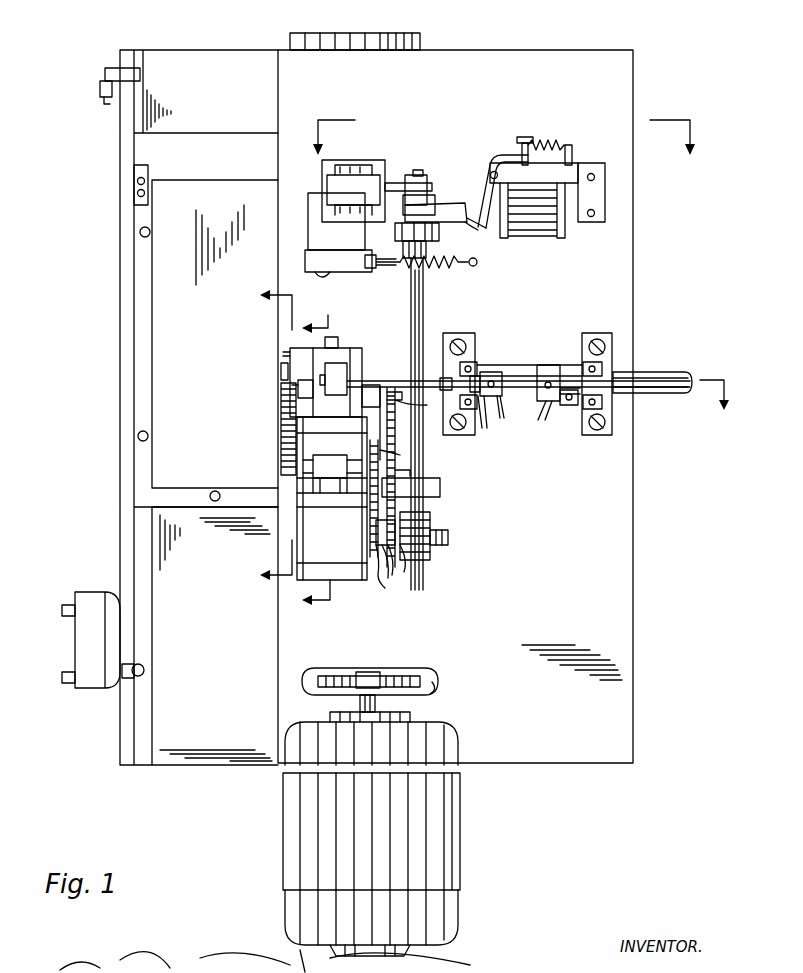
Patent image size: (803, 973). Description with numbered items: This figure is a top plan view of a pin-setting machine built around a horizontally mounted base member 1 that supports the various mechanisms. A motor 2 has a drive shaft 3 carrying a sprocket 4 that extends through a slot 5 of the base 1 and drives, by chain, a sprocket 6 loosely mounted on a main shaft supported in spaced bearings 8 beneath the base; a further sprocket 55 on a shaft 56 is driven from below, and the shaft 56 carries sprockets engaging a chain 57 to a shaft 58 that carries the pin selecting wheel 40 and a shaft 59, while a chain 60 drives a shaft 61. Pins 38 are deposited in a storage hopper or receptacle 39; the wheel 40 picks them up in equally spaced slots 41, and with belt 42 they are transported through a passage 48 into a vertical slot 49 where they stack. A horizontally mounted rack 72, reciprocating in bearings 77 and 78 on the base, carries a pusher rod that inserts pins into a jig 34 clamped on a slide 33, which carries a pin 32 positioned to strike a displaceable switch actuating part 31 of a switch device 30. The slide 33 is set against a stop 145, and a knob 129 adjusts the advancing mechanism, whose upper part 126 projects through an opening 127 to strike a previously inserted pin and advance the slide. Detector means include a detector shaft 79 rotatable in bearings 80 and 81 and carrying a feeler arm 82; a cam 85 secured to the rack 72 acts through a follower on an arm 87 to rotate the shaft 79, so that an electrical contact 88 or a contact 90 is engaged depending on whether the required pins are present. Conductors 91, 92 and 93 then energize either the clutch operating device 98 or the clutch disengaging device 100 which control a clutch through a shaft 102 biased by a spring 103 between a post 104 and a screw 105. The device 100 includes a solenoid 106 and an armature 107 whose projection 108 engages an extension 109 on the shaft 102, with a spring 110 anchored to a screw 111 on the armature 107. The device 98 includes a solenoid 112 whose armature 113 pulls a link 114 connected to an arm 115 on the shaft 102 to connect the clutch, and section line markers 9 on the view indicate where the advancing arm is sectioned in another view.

The base member 1 is at (633, 245).
The motor 2 is at (448, 914).
The drive shaft 3 is at (375, 705).
The sprocket 4 is at (428, 676).
The slot 5 is at (436, 688).
The sprocket 6 is at (510, 384).
The bearings 8 is at (501, 137).
The section line 9 is at (272, 442).
The switch device 30 is at (75, 646).
The switch actuating part 31 is at (142, 674).
The pin 32 is at (138, 437).
The slide 33 is at (193, 510).
The jig 34 is at (152, 494).
The pins 38 is at (281, 470).
The storage hopper or receptacle 39 is at (318, 560).
The pin selecting wheel 40 is at (339, 495).
The slots 41 is at (312, 495).
The belt 42 is at (340, 458).
The passage 48 is at (312, 348).
The vertical slot 49 is at (430, 528).
The sprocket 55 is at (440, 548).
The shaft 56 is at (388, 578).
The chain 57 is at (385, 588).
The shaft 58 is at (400, 455).
The shaft 59 is at (380, 450).
The chain 60 is at (402, 398).
The shaft 61 is at (372, 385).
The rack 72 is at (652, 393).
The bearing 77 is at (602, 434).
The bearing 78 is at (465, 434).
The detector shaft 79 is at (404, 381).
The bearing 80 is at (612, 370).
The bearing 81 is at (477, 345).
The feeler arm 82 is at (348, 395).
The cam 85 is at (558, 398).
The arm 87 is at (555, 365).
The electrical contact 88 is at (512, 375).
The contact 90 is at (484, 372).
The conductor 91 is at (502, 418).
The conductor 92 is at (545, 426).
The conductor 93 is at (484, 428).
The clutch operating device 98 is at (348, 143).
The clutch disengaging device 100 is at (575, 168).
The shaft 102 is at (423, 318).
The spring 103 is at (446, 262).
The post 104 is at (477, 263).
The screw 105 is at (392, 268).
The solenoid 106 is at (540, 236).
The armature 107 is at (485, 226).
The projection 108 is at (487, 182).
The extension 109 is at (468, 205).
The spring 110 is at (540, 144).
The screw 111 is at (522, 138).
The solenoid 112 is at (385, 165).
The armature 113 is at (385, 170).
The link 114 is at (430, 182).
The arm 115 is at (425, 170).
The upper part 126 is at (281, 370).
The opening 127 is at (283, 354).
The knob 129 is at (360, 33).
The stop 145 is at (140, 74).